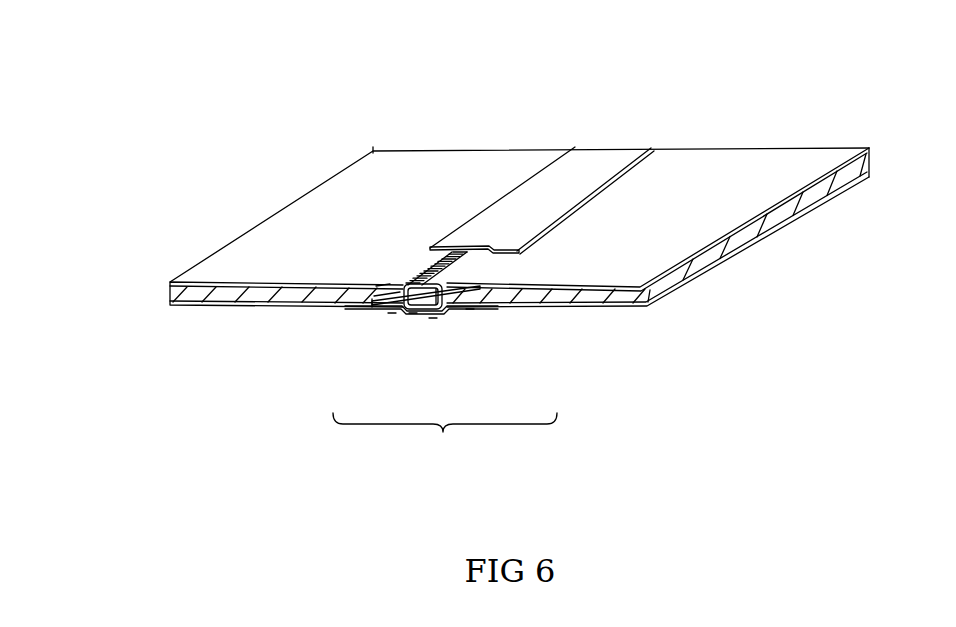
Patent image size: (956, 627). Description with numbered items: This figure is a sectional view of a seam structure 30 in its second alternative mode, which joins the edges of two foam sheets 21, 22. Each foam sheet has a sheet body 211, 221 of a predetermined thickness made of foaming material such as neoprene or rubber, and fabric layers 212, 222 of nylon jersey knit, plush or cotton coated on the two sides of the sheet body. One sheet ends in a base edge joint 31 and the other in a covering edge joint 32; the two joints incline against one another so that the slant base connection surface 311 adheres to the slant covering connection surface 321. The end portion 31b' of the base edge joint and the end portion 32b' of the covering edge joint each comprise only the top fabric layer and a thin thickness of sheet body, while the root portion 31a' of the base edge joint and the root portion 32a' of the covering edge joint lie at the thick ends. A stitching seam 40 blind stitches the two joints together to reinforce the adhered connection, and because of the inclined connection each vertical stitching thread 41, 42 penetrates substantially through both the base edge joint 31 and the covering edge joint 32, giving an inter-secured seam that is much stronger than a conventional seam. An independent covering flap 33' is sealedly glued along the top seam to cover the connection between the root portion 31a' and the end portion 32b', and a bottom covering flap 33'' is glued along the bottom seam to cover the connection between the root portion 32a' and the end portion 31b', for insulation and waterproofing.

The foam sheet 21 is at (649, 177).
The foam sheet 22 is at (519, 211).
The sheet body 211 is at (657, 260).
The fabric layer 212 is at (657, 247).
The sheet body 221 is at (222, 295).
The fabric layer 222 is at (252, 333).
The seam structure 30 is at (445, 435).
The base edge joint 31 is at (425, 320).
The slant base connection surface 311 is at (440, 323).
The root portion of base edge joint 31a' is at (517, 336).
The end portion of base edge joint 31b' is at (375, 335).
The covering edge joint 32 is at (373, 187).
The slant covering connection surface 321 is at (378, 205).
The root portion of covering edge joint 32a' is at (343, 244).
The end portion of covering edge joint 32b' is at (476, 176).
The covering flap 33' is at (585, 162).
The bottom covering flap 33'' is at (337, 347).
The stitching seam 40 is at (410, 148).
The vertical stitching thread 41 is at (343, 364).
The vertical stitching thread 42 is at (482, 357).